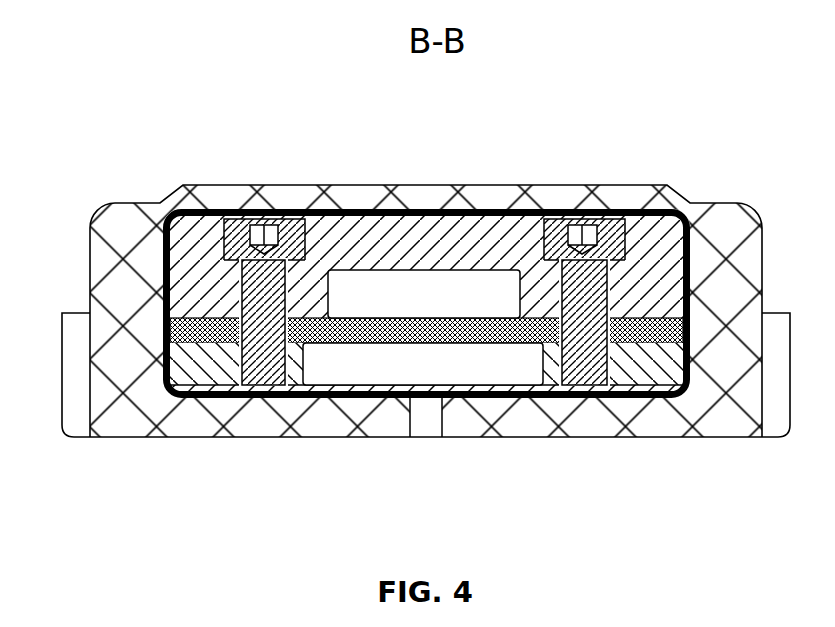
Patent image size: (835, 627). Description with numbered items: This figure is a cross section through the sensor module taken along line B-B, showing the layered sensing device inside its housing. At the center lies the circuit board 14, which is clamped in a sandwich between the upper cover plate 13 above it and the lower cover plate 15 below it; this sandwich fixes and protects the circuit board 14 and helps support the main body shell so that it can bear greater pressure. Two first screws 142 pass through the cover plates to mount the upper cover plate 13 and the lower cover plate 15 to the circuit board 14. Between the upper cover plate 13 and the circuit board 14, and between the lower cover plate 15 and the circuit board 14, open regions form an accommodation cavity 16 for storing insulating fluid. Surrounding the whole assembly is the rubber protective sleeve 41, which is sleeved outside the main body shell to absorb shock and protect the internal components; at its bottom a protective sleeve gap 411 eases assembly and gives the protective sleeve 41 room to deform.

The upper cover plate 13 is at (342, 242).
The circuit board 14 is at (388, 338).
The lower cover plate 15 is at (207, 368).
The accommodation cavity 16 is at (415, 290).
The protective sleeve 41 is at (223, 200).
The first screws 142 is at (590, 242).
The protective sleeve gap 411 is at (430, 418).